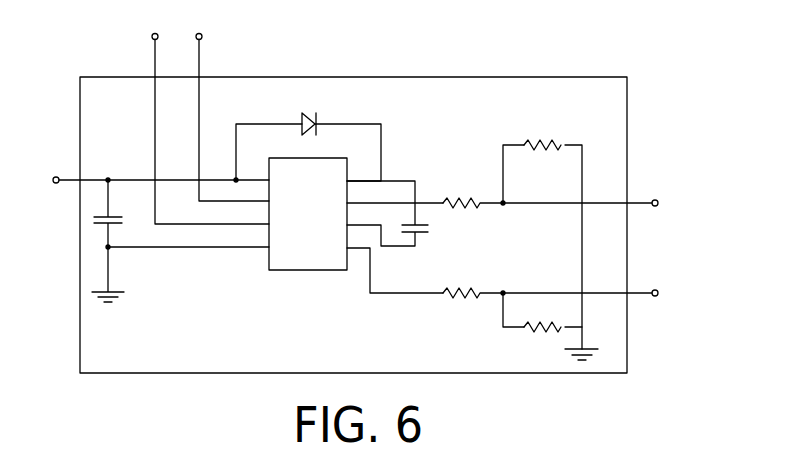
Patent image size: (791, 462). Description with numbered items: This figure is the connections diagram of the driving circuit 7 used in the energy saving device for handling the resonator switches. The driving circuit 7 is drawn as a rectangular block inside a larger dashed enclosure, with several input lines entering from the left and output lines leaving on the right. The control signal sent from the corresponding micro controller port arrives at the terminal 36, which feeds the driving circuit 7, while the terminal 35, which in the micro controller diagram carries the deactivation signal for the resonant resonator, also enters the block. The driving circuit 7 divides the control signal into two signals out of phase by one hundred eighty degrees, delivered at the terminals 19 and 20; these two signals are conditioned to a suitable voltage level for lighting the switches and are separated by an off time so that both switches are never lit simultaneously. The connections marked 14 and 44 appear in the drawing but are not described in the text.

The input terminal 14 is at (144, 180).
The terminal 35 is at (206, 115).
The terminal 36 is at (228, 104).
The ground connection line 44 is at (187, 235).
The driving circuit 7 is at (270, 272).
The terminal 19 is at (519, 244).
The terminal 20 is at (567, 307).